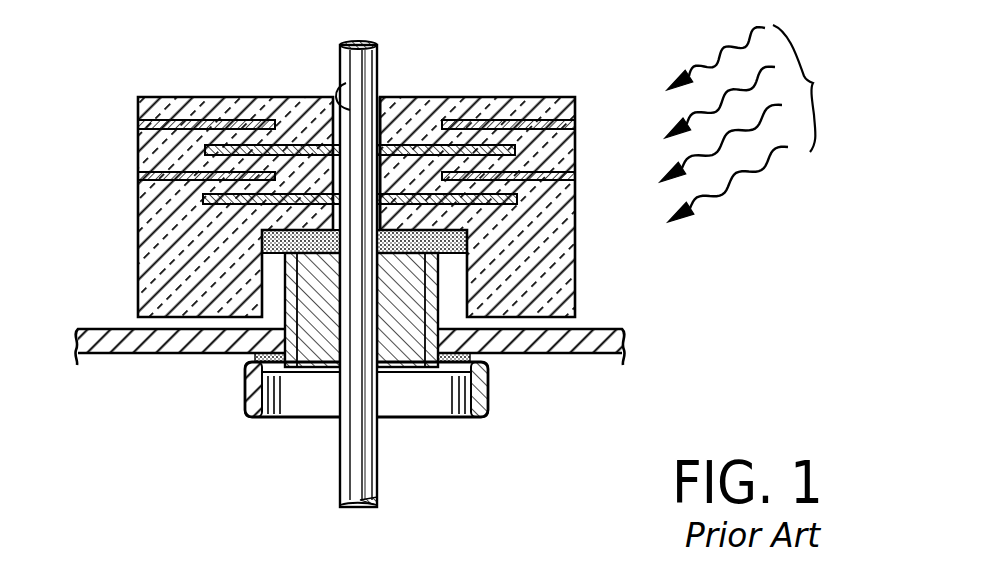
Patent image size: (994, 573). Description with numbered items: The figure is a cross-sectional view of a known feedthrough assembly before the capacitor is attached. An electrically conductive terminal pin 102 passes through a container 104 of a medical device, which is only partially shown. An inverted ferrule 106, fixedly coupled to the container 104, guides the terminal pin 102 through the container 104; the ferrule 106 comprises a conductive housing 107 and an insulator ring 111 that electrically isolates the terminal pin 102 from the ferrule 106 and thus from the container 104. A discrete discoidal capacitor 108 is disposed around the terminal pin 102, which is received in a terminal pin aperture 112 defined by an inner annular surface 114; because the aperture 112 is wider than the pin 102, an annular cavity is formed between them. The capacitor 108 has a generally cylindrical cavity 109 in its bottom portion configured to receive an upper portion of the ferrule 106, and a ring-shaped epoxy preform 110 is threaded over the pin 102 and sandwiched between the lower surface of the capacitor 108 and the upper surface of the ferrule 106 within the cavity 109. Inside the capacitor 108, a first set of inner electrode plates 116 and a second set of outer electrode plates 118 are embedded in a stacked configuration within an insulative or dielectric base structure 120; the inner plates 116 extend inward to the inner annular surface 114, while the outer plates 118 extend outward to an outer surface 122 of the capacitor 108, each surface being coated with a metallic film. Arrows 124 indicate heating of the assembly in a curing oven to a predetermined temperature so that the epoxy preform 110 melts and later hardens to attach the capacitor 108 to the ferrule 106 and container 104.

The terminal pin 102 is at (372, 45).
The container 104 is at (160, 354).
The inverted ferrule 106 is at (249, 427).
The conductive housing 107 is at (272, 283).
The discoidal capacitor 108 is at (127, 232).
The cylindrical cavity 109 is at (232, 354).
The epoxy preform 110 is at (468, 246).
The insulator ring 111 is at (318, 350).
The terminal pin aperture 112 is at (380, 98).
The inner annular surface 114 is at (342, 82).
The inner electrode plates 116 is at (388, 170).
The outer electrode plates 118 is at (137, 124).
The base structure 120 is at (573, 307).
The outer surface 122 is at (137, 200).
The arrows 124 is at (760, 123).